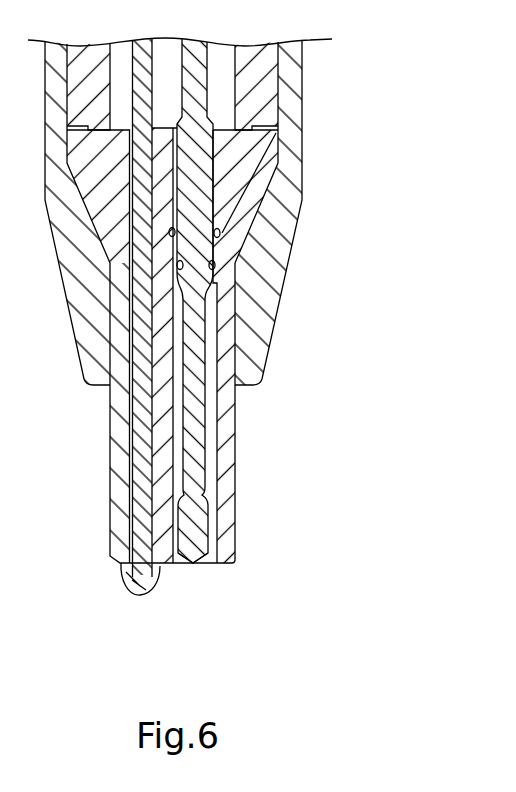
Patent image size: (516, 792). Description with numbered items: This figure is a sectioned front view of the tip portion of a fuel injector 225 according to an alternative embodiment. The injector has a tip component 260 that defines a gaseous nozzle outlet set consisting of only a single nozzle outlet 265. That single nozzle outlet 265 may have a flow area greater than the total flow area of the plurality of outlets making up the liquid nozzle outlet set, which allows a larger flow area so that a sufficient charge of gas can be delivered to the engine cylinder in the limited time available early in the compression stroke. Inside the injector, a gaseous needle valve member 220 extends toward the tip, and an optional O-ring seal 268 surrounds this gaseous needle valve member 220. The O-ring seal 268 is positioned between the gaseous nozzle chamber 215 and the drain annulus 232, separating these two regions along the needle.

The fuel injector 225 is at (308, 140).
The drain annulus 232 is at (220, 233).
The O-ring seal 268 is at (215, 263).
The gaseous needle valve member 220 is at (199, 306).
The gaseous nozzle chamber 215 is at (212, 407).
The tip component 260 is at (228, 467).
The nozzle outlet 265 is at (197, 563).